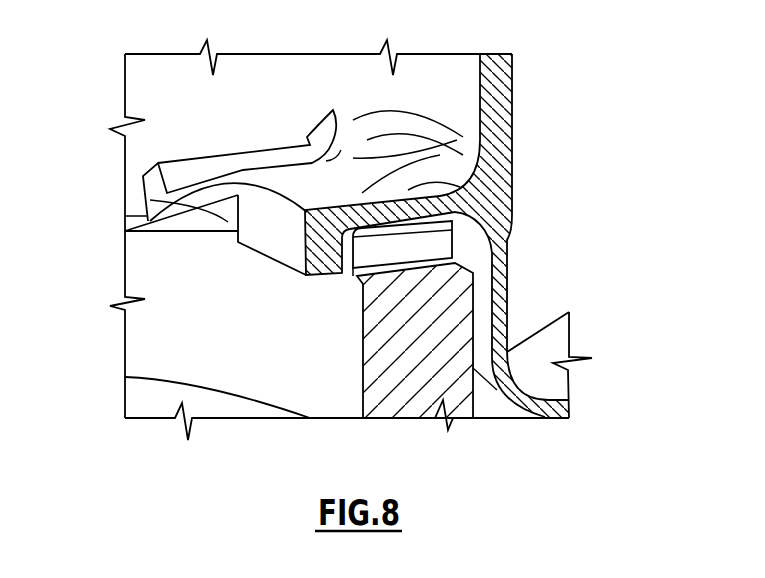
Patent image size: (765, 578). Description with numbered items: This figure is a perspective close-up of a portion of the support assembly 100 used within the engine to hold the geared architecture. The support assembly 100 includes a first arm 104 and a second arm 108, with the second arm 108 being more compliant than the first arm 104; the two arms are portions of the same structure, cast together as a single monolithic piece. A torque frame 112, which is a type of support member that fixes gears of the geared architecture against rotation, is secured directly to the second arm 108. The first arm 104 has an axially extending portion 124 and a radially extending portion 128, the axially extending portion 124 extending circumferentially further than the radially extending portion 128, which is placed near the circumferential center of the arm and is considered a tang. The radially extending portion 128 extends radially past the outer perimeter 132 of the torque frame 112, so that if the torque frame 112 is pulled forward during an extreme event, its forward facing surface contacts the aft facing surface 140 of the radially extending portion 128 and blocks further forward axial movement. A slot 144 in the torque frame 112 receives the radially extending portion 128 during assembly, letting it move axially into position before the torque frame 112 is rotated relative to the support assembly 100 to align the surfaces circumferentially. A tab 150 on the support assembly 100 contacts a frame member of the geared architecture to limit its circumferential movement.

The support assembly 100 is at (447, 87).
The first arm 104 is at (407, 145).
The second arm 108 is at (540, 348).
The torque frame 112 is at (379, 393).
The axially extending portion 124 is at (503, 211).
The radially extending portion 128 is at (273, 233).
The outer perimeter 132 is at (150, 200).
The aft facing surface 140 is at (302, 372).
The slot 144 is at (458, 249).
The tab 150 is at (251, 160).